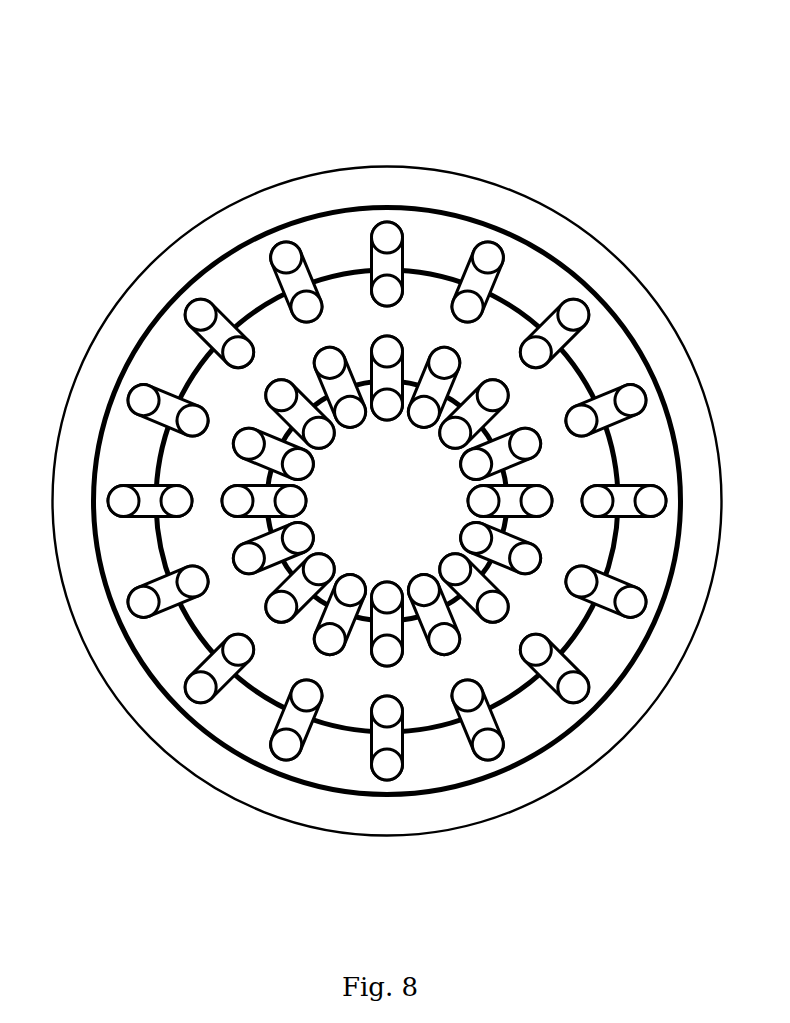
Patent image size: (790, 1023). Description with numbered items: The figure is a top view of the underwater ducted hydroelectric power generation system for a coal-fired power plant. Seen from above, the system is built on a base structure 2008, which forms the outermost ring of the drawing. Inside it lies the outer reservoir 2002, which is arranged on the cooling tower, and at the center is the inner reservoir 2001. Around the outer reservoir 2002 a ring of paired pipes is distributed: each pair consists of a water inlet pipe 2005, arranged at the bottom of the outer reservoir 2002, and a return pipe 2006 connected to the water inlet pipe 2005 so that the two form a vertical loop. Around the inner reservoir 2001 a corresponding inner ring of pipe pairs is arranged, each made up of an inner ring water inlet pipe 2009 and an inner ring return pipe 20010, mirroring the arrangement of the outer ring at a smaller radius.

The base structure 2008 is at (157, 263).
The inner reservoir 2001 is at (360, 478).
The inner ring return pipe 20010 is at (338, 357).
The inner ring water inlet pipe 2009 is at (353, 412).
The outer reservoir 2002 is at (435, 235).
The water inlet pipe 2005 is at (490, 255).
The return pipe 2006 is at (472, 310).